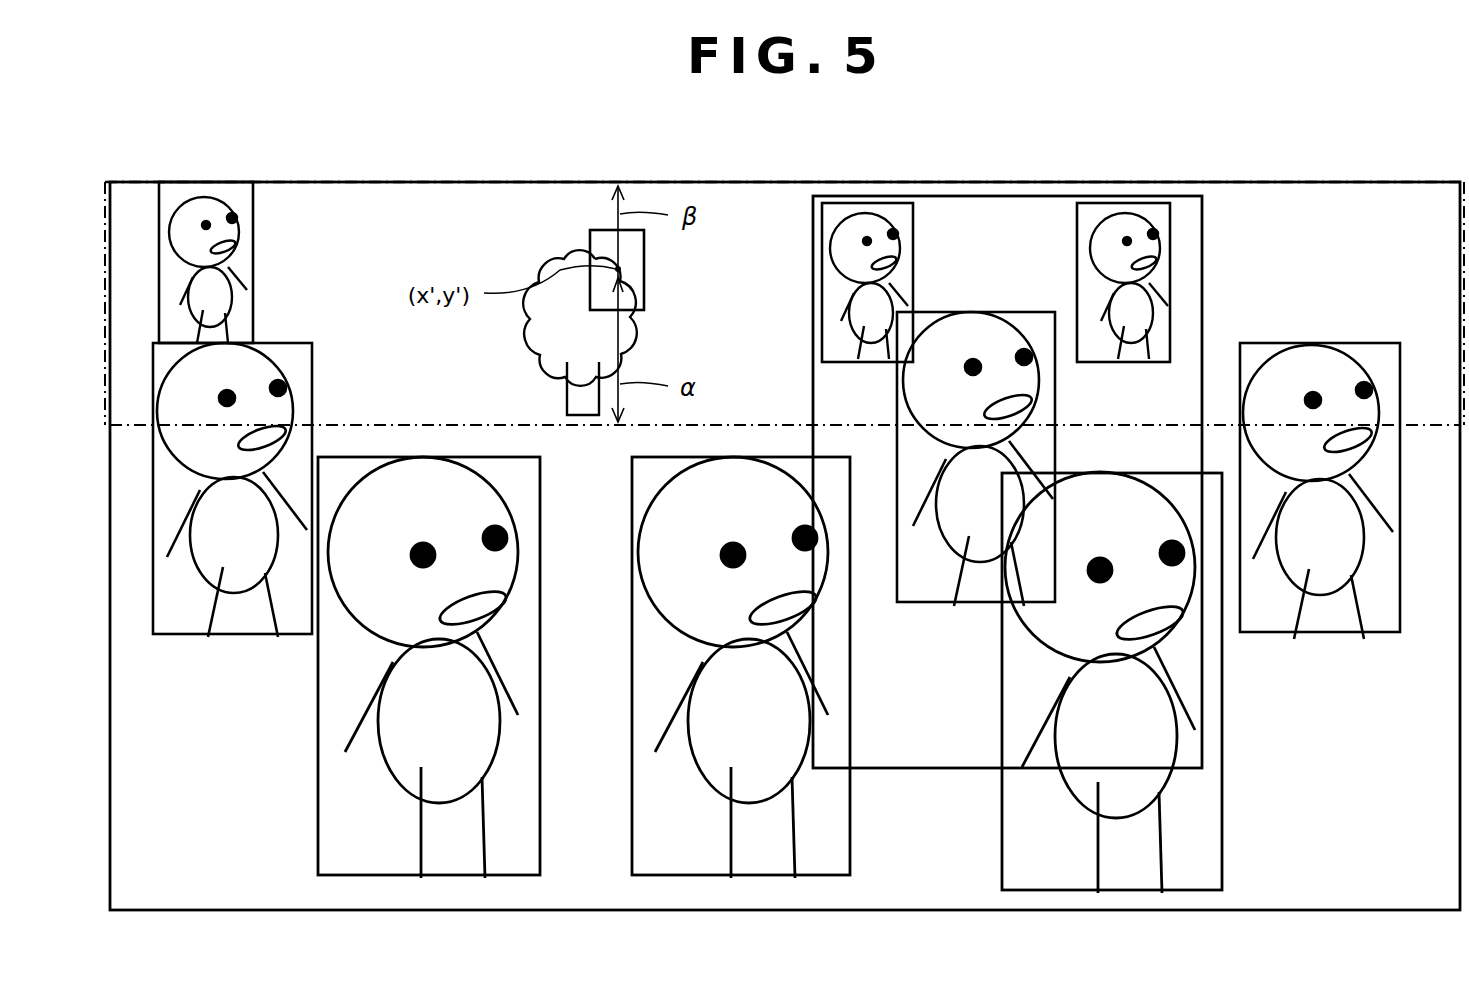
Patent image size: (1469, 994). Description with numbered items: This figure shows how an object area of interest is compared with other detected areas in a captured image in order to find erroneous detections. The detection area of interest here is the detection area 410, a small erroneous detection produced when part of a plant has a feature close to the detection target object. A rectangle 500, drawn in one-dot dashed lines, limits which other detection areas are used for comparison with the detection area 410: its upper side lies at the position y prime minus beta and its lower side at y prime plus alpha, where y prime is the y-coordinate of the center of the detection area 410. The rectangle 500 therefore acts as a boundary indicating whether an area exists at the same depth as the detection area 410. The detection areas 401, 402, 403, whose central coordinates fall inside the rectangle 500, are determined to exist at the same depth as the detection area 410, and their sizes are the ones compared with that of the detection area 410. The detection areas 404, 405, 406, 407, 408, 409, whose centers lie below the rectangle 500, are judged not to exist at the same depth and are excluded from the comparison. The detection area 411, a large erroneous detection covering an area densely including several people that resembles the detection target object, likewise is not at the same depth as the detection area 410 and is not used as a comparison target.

The rectangle 500 is at (744, 181).
The detection area 401 is at (254, 212).
The detection area 402 is at (861, 203).
The detection area 403 is at (1122, 203).
The detection area 404 is at (281, 343).
The detection area 405 is at (1057, 391).
The detection area 406 is at (1308, 343).
The detection area 407 is at (540, 816).
The detection area 408 is at (850, 816).
The detection area 409 is at (1222, 764).
The detection area 410 is at (590, 241).
The detection area 411 is at (990, 196).